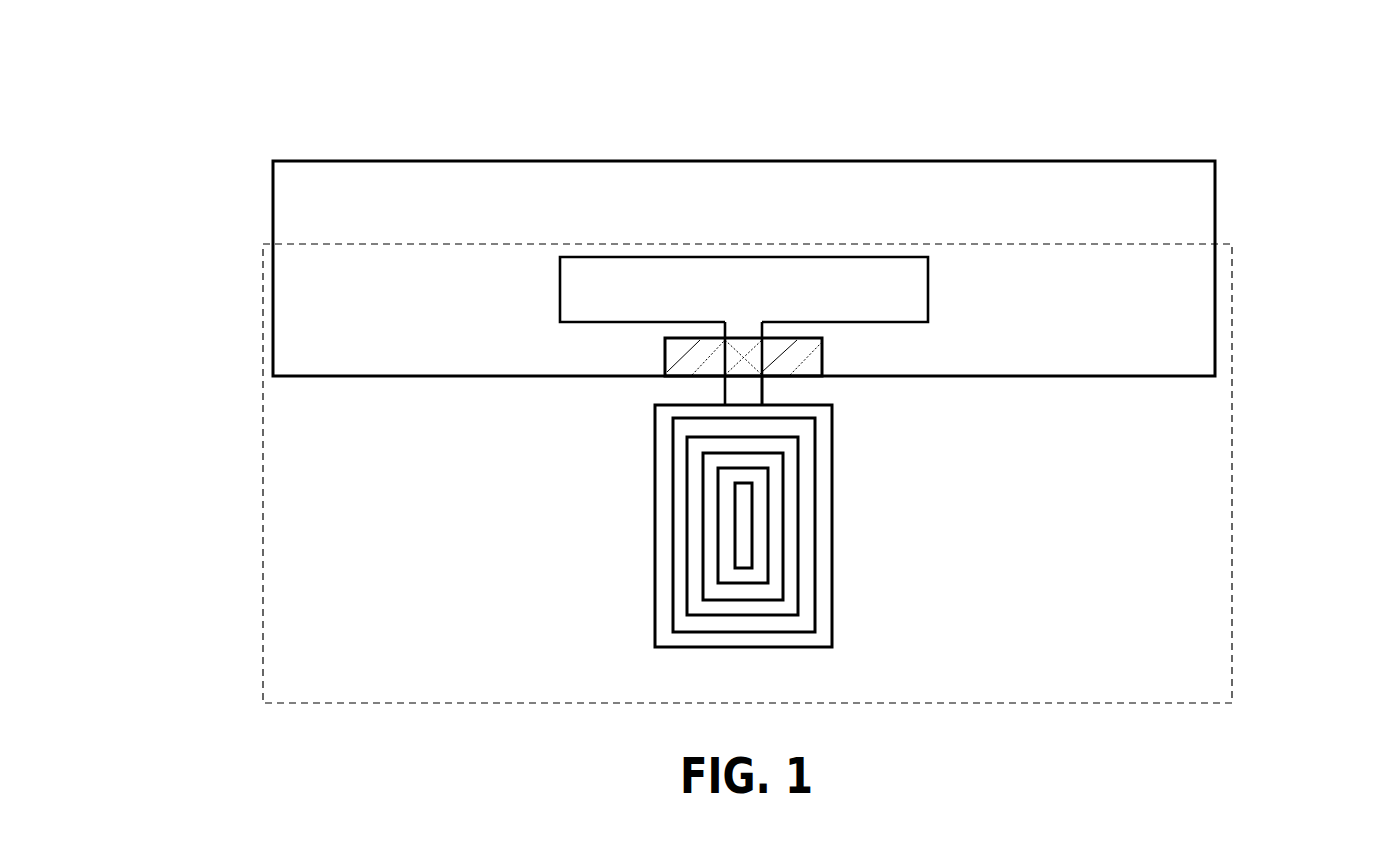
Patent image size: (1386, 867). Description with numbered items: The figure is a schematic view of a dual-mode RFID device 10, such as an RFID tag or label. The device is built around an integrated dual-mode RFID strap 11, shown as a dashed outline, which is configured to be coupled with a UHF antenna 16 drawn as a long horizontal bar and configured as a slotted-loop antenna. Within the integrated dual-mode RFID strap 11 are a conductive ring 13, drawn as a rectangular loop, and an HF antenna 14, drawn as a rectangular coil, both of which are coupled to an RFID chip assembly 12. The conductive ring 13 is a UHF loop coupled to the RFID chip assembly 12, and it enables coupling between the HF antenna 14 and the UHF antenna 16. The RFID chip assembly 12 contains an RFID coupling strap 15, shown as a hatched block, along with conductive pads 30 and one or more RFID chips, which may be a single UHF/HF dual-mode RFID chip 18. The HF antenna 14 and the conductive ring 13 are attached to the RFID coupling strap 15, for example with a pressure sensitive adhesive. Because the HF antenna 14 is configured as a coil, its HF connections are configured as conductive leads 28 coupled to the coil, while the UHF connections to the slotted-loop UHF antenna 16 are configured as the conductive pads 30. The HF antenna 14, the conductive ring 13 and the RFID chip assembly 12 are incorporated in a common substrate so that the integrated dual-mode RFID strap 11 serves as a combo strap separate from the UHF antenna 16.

The dual-mode RFID device 10 is at (220, 155).
The integrated dual-mode RFID strap 11 is at (1242, 265).
The RFID chip assembly 12 is at (655, 390).
The conductive ring 13 is at (928, 302).
The HF antenna 14 is at (743, 648).
The RFID coupling strap 15 is at (822, 357).
The UHF antenna 16 is at (657, 160).
The UHF/HF dual-mode RFID chip 18 is at (743, 340).
The conductive leads 28 is at (763, 388).
The conductive pads 30 is at (800, 340).